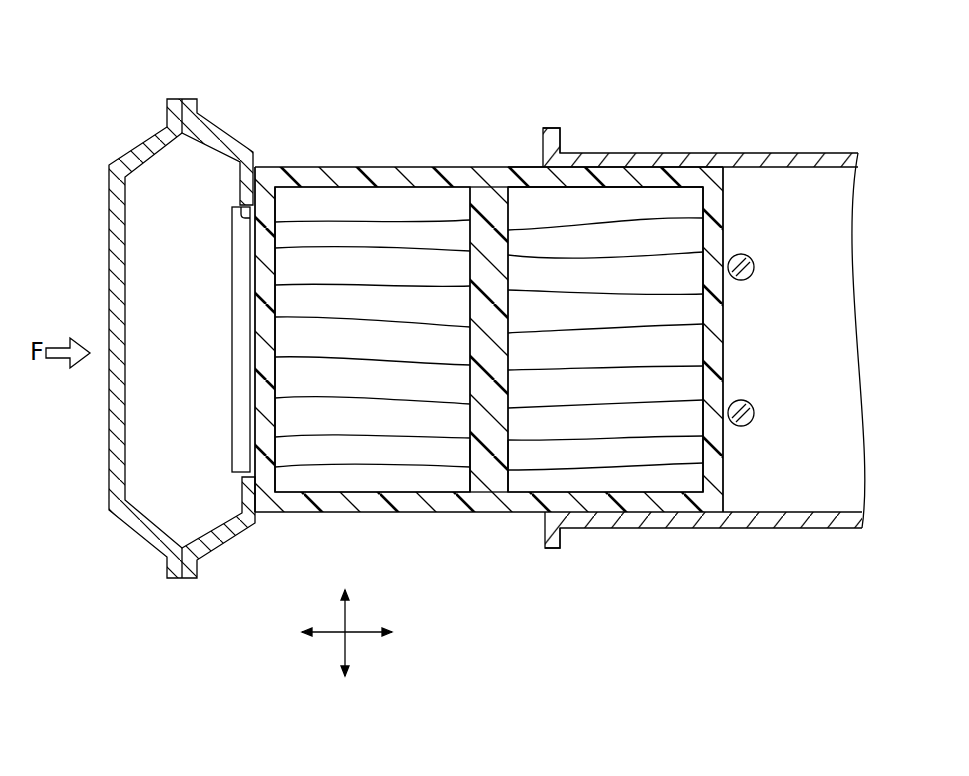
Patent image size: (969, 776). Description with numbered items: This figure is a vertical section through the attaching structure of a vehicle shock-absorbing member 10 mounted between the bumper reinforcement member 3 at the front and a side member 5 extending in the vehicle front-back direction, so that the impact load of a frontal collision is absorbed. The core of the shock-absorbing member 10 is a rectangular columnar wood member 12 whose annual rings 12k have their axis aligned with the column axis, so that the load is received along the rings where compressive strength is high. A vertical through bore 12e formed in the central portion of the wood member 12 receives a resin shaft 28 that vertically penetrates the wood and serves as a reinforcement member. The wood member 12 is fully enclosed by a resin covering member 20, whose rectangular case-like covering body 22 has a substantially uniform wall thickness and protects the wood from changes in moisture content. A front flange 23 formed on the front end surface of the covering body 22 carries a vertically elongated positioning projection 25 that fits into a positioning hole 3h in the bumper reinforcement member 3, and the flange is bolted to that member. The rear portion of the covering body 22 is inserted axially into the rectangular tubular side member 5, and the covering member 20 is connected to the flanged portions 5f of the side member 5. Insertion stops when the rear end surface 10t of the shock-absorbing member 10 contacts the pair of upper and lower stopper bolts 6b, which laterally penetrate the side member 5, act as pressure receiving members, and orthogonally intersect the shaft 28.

The bumper reinforcement member 3 is at (101, 279).
The positioning hole 3h is at (232, 211).
The positioning projection 25 is at (243, 348).
The front flange 23 is at (263, 207).
The covering member 20 is at (340, 167).
The covering body 22 is at (617, 175).
The shock-absorbing member 10 is at (464, 137).
The rear end surface 10t is at (723, 355).
The wood member 12 is at (412, 227).
The annual rings 12k is at (653, 258).
The through bore 12e is at (506, 457).
The shaft 28 is at (487, 242).
The side member 5 is at (813, 153).
The flanged portion 5f is at (551, 128).
The stopper bolt 6b is at (750, 268).